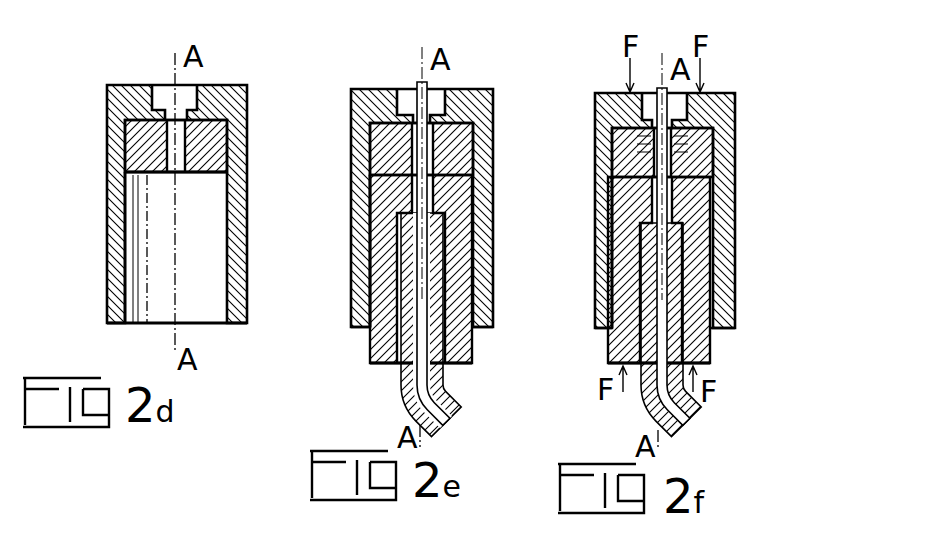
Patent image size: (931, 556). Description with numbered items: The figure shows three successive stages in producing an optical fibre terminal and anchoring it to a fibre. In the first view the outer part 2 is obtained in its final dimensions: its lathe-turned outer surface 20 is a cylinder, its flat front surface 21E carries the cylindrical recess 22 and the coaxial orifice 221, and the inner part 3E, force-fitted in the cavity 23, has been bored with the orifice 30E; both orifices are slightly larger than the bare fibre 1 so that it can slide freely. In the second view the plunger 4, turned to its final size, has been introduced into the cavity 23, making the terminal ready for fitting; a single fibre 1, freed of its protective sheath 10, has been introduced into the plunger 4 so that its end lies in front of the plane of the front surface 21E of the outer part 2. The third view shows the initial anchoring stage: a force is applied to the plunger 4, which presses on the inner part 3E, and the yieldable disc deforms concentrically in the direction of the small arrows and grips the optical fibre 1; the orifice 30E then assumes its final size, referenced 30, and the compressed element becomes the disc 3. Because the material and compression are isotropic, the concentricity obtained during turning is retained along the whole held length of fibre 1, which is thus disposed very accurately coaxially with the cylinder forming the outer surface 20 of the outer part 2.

In FIG. 2E, the bare fibre 1 is at (432, 212).
In FIG. 2F, the bare fibre 1 is at (672, 212).
In FIG. 2D, the outer part 2 is at (120, 253).
In FIG. 2E, the outer part 2 is at (360, 262).
In FIG. 2F, the outer part 2 is at (602, 272).
In FIG. 2F, the disc 3 is at (713, 175).
In FIG. 2D, the inner part 3E is at (217, 162).
In FIG. 2E, the inner part 3E is at (462, 172).
In FIG. 2E, the plunger 4 is at (455, 262).
In FIG. 2F, the plunger 4 is at (700, 263).
In FIG. 2E, the protective sheath 10 is at (472, 345).
In FIG. 2F, the protective sheath 10 is at (713, 333).
In FIG. 2D, the outer surface 20 is at (107, 203).
In FIG. 2E, the outer surface 20 is at (351, 222).
In FIG. 2F, the outer surface 20 is at (595, 223).
In FIG. 2D, the front surface 21E is at (228, 87).
In FIG. 2E, the front surface 21E is at (472, 89).
In FIG. 2F, the front surface 21E is at (722, 95).
In FIG. 2D, the cylindrical recess 22 is at (158, 85).
In FIG. 2E, the cylindrical recess 22 is at (405, 89).
In FIG. 2F, the cylindrical recess 22 is at (650, 93).
In FIG. 2D, the orifice in front surface 221 is at (188, 112).
In FIG. 2E, the orifice in front surface 221 is at (434, 118).
In FIG. 2F, the orifice in front surface 221 is at (700, 128).
In FIG. 2D, the cavity 23 is at (122, 277).
In FIG. 2E, the cavity 23 is at (370, 300).
In FIG. 2F, the cavity 23 is at (602, 307).
In FIG. 2F, the final orifice of disc 30 is at (707, 150).
In FIG. 2D, the orifice in inner part 30E is at (183, 140).
In FIG. 2E, the orifice in inner part 30E is at (437, 142).